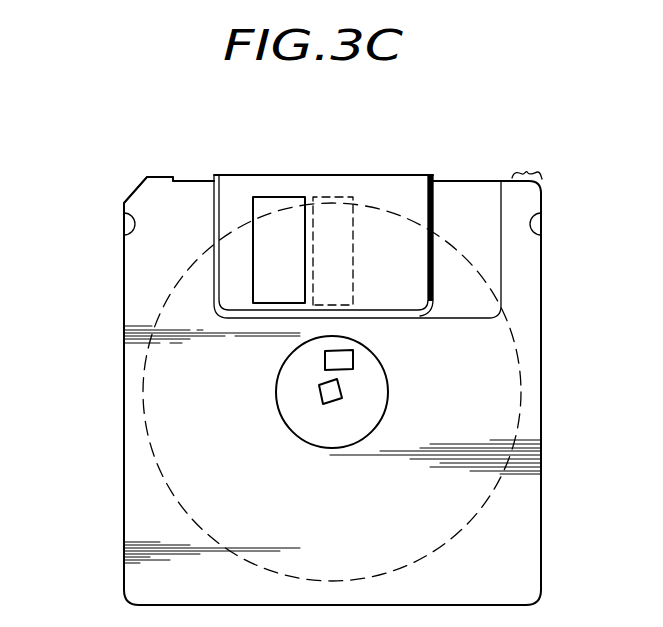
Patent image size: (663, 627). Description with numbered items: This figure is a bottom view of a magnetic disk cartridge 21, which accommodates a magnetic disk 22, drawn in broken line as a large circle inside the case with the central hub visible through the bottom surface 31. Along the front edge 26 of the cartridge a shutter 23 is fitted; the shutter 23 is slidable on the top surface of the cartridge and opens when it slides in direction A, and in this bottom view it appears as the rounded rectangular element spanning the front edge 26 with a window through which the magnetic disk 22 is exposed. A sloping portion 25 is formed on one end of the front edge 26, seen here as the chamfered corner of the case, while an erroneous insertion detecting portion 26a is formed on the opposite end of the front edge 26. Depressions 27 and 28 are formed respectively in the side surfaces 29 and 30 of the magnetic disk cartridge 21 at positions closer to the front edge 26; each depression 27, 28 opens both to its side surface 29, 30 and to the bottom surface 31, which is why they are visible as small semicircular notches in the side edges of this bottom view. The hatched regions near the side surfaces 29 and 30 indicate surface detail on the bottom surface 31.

The magnetic disk cartridge 21 is at (434, 109).
The magnetic disk 22 is at (517, 362).
The shutter 23 is at (373, 187).
The sloping portion 25 is at (138, 192).
The front edge 26 is at (203, 180).
The erroneous insertion detecting portion 26a is at (528, 167).
The depression 27 is at (543, 225).
The depression 28 is at (133, 227).
The side surface 29 is at (541, 424).
The side surface 30 is at (122, 395).
The bottom surface 31 is at (135, 523).